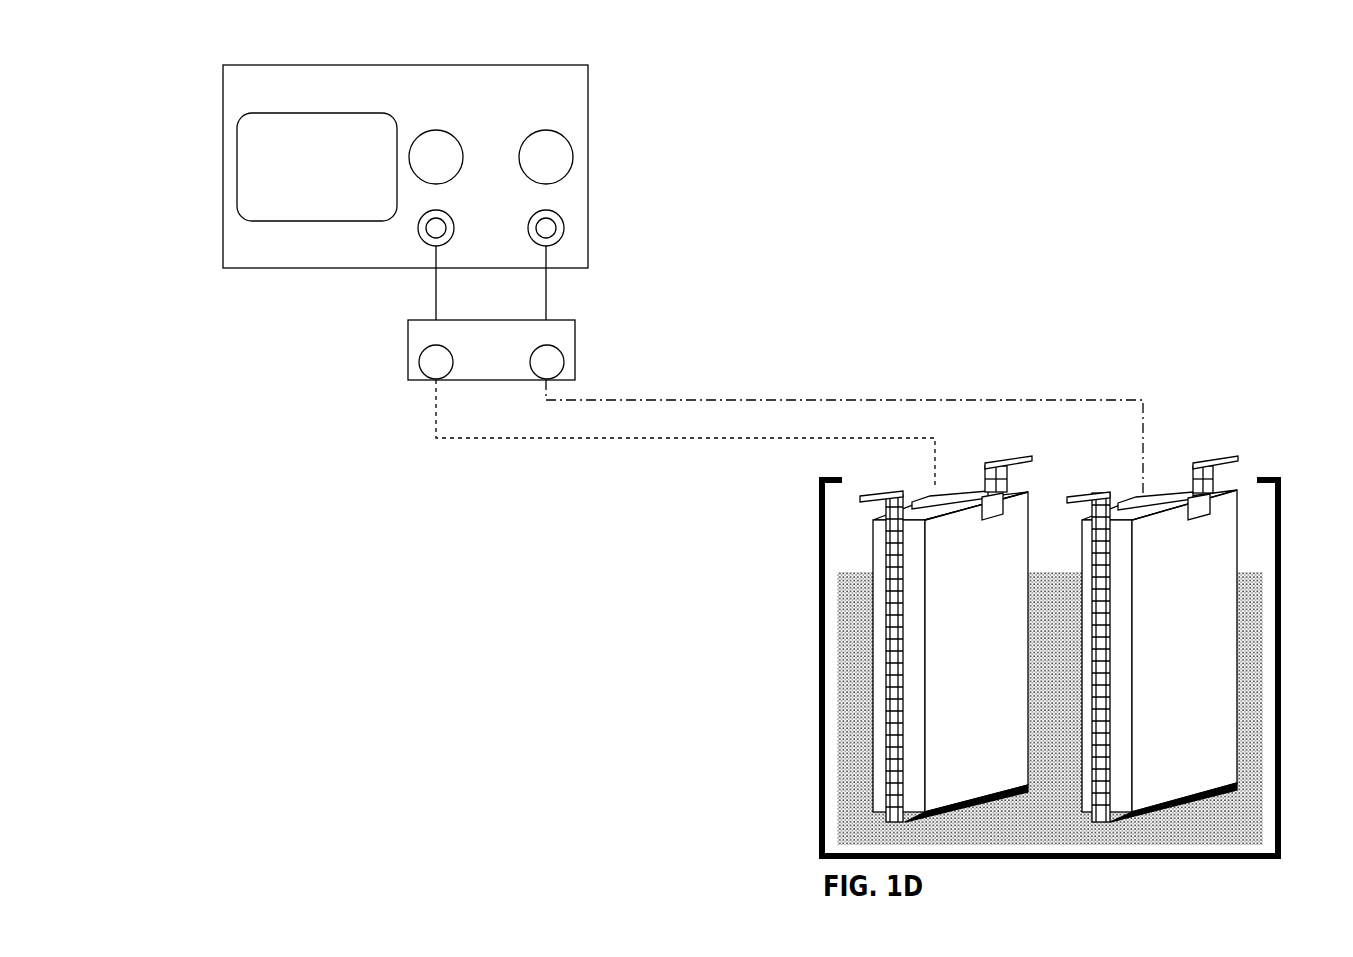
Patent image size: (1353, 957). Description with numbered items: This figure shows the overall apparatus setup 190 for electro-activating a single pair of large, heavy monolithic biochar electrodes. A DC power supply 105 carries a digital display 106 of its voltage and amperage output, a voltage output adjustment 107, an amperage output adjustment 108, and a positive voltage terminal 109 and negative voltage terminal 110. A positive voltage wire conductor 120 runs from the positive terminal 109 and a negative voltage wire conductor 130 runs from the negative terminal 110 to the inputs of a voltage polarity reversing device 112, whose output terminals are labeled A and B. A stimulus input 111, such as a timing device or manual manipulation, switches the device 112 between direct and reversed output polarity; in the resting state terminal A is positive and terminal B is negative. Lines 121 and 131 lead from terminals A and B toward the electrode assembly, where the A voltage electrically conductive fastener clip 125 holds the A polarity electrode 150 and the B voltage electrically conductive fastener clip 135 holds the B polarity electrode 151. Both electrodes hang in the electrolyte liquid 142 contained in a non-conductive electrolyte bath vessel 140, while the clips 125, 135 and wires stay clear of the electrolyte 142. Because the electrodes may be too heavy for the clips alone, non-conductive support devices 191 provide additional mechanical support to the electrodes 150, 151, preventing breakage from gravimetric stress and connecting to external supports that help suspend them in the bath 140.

The DC power supply 105 is at (587, 170).
The digital display 106 is at (245, 170).
The voltage output adjustment 107 is at (436, 130).
The amperage output adjustment 108 is at (547, 130).
The positive voltage terminal 109 is at (418, 227).
The negative voltage terminal 110 is at (567, 227).
The stimulus input 111 is at (577, 340).
The voltage polarity reversing device 112 is at (408, 338).
The positive voltage wire conductor 120 is at (434, 290).
The connection line A 121 is at (615, 440).
The A voltage electrically conductive fastener clip 125 is at (950, 495).
The negative voltage wire conductor 130 is at (548, 290).
The connection line B 131 is at (763, 400).
The B voltage electrically conductive fastener clip 135 is at (1227, 500).
The electrolyte bath vessel 140 is at (820, 807).
The electrolyte liquid 142 is at (1253, 803).
The A polarity monolithic biochar electrode 150 is at (942, 645).
The B polarity monolithic biochar electrode 151 is at (1223, 678).
The overall apparatus setup 190 is at (751, 439).
The support device 191 is at (873, 497).